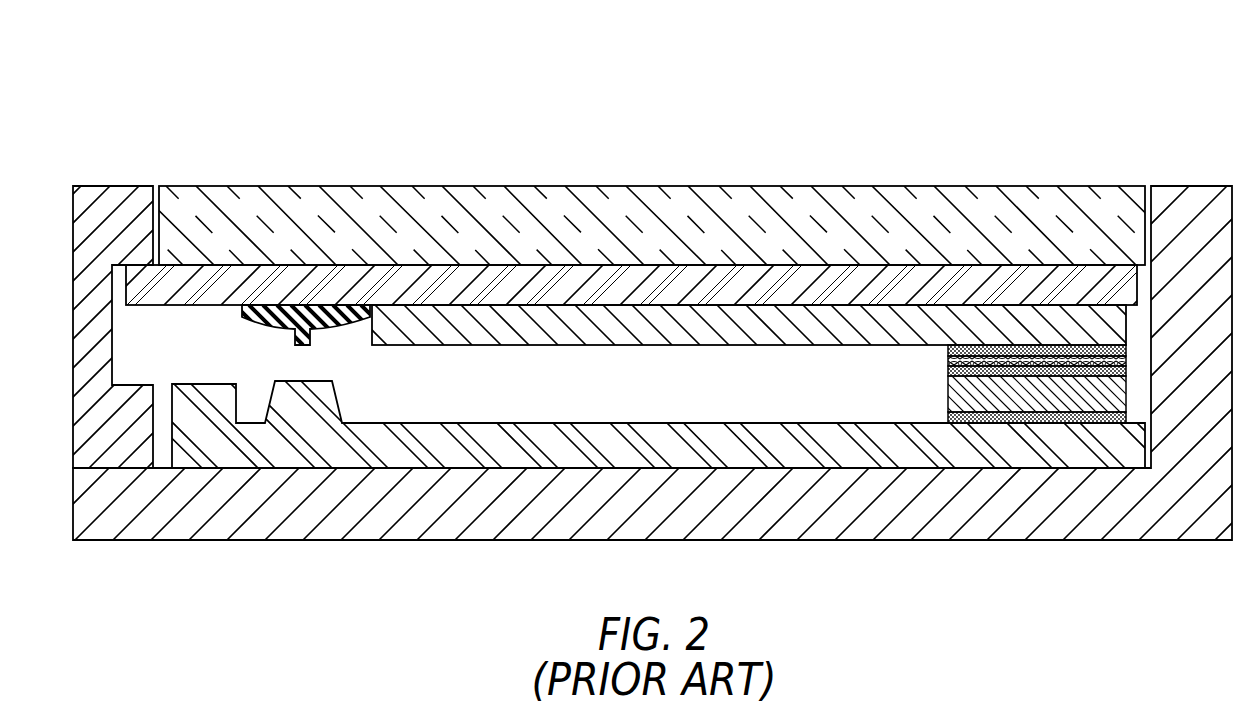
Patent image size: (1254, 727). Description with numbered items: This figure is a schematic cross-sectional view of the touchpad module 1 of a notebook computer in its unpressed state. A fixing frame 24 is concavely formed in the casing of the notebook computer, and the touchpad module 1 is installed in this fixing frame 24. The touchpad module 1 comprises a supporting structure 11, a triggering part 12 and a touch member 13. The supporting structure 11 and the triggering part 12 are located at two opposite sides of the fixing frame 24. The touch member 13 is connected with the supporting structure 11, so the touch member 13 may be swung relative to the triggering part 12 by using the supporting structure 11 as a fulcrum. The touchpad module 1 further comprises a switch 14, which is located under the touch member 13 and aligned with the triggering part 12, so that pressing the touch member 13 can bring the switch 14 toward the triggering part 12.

The touchpad module 1 is at (1121, 93).
The supporting structure 11 is at (1035, 397).
The triggering part 12 is at (325, 403).
The touch member 13 is at (971, 283).
The switch 14 is at (301, 315).
The fixing frame 24 is at (113, 200).